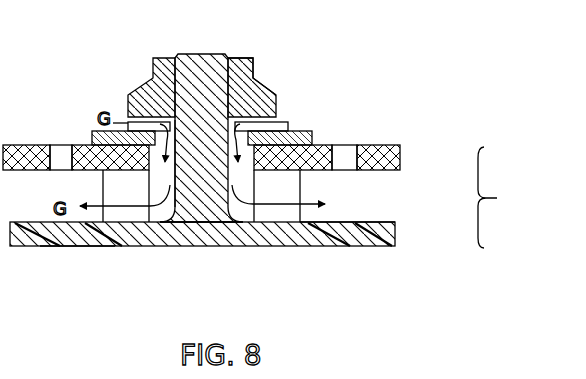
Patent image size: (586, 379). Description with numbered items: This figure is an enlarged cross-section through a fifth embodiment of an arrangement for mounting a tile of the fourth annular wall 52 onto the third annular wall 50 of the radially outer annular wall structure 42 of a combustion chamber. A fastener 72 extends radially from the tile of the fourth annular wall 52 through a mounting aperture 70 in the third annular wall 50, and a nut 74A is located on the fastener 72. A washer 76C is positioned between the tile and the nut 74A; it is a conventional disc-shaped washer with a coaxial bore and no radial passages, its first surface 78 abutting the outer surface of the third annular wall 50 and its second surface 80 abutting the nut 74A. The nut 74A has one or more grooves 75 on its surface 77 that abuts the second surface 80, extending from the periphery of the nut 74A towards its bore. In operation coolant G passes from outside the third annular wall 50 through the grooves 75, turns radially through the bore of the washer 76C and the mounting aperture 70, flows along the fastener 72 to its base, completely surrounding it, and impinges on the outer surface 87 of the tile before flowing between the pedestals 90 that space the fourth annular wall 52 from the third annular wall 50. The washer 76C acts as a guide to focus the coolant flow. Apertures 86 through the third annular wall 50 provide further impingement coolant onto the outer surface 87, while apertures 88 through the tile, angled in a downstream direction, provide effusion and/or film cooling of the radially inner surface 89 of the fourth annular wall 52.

The radially outer annular wall structure 42 is at (497, 199).
The fastener 72 is at (202, 65).
The surface of the nut 77 is at (180, 212).
The radially inner surface of the fourth annular wall 89 is at (209, 248).
The grooves 75 is at (150, 112).
The nut 74A is at (240, 85).
The second surface of the washer 80 is at (293, 124).
The washer 76C is at (313, 136).
The third annular wall 50 is at (400, 148).
The apertures 86 is at (60, 150).
The mounting apertures 70 is at (263, 208).
The first surface of the washer 78 is at (314, 224).
The fourth annular wall 52 is at (392, 236).
The apertures 88 is at (108, 248).
The radially outer surface of the fourth annular wall 87 is at (386, 220).
The pedestals 90 is at (293, 198).